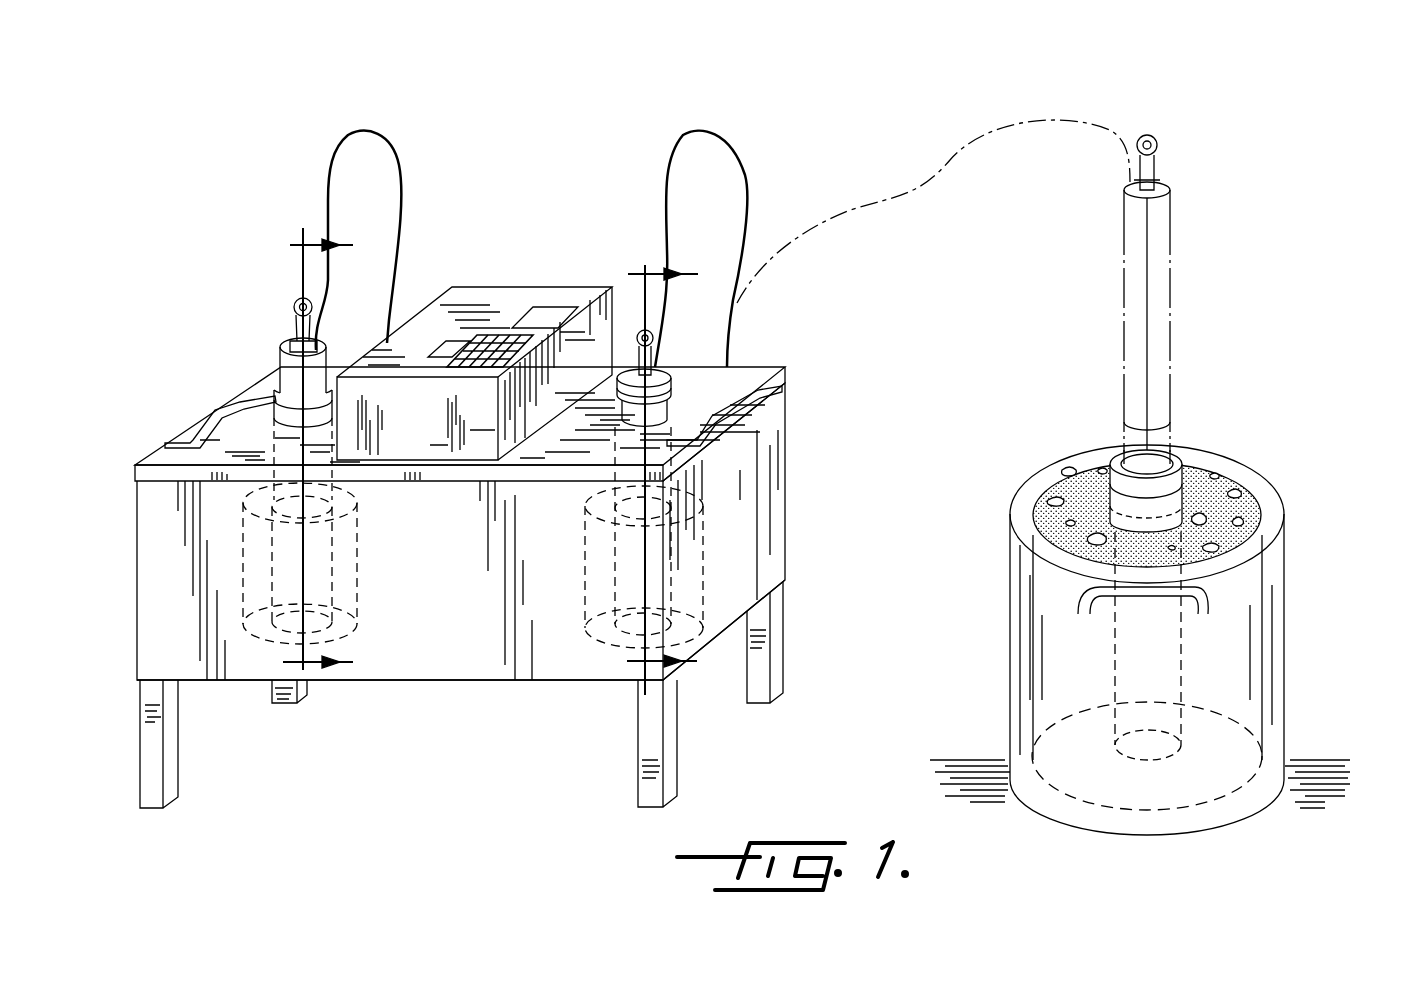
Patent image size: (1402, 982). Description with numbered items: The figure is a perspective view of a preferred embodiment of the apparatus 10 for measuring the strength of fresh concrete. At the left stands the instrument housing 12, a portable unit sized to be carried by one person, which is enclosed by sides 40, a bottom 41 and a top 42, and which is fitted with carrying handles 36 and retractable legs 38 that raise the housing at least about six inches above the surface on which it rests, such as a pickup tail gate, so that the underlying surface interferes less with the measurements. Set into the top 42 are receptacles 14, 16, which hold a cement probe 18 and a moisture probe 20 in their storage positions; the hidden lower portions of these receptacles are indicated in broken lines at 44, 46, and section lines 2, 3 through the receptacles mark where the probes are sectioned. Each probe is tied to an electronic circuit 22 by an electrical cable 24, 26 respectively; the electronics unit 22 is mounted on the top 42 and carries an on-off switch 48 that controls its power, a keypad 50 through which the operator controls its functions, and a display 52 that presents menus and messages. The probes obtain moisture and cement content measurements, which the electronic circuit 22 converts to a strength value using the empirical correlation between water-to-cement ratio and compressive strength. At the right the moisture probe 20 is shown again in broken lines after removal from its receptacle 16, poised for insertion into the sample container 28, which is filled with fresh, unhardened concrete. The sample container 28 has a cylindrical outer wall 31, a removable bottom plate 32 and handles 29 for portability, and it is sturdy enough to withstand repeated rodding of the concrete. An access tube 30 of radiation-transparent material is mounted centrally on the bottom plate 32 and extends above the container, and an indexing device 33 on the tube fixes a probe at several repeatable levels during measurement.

The apparatus 10 is at (948, 82).
The instrument housing 12 is at (788, 450).
The receptacle 14 is at (278, 400).
The receptacle 16 is at (672, 418).
The cement probe 18 is at (328, 345).
The moisture probe 20 is at (667, 372).
The electronic circuit 22 is at (483, 288).
The electrical cable 24 is at (403, 166).
The electrical cable 26 is at (737, 165).
The sample container 28 is at (1285, 578).
The handles 29 is at (1203, 601).
The access tube 30 is at (1243, 482).
The cylindrical outer wall 31 is at (1272, 512).
The bottom plate 32 is at (1232, 800).
The indexing device 33 is at (1180, 458).
The carrying handles 36 is at (220, 398).
The retractable legs 38 is at (152, 737).
The sides 40 is at (773, 503).
The bottom 41 is at (580, 683).
The top 42 is at (163, 457).
The hidden cylinder 44 is at (345, 545).
The hidden cylinder 46 is at (706, 560).
The on-off switch 48 is at (450, 340).
The keypad 50 is at (515, 345).
The display 52 is at (548, 326).
The section line 2 is at (302, 451).
The section line 3 is at (646, 474).